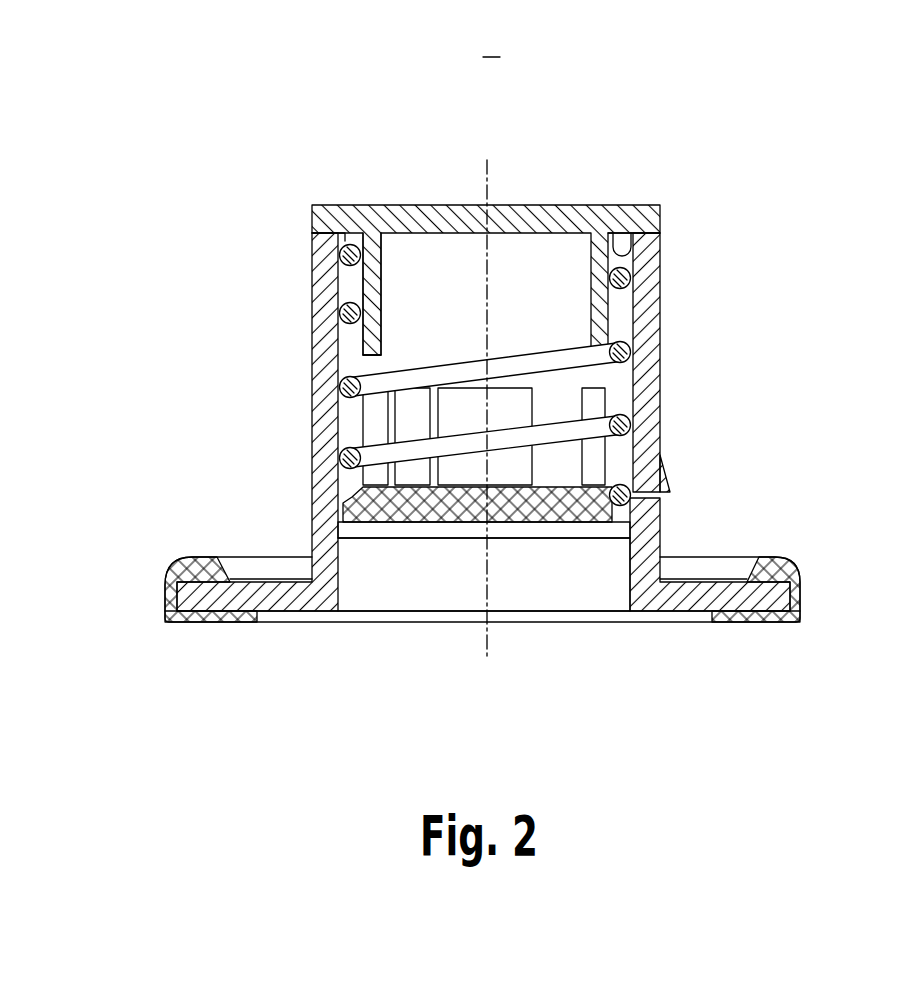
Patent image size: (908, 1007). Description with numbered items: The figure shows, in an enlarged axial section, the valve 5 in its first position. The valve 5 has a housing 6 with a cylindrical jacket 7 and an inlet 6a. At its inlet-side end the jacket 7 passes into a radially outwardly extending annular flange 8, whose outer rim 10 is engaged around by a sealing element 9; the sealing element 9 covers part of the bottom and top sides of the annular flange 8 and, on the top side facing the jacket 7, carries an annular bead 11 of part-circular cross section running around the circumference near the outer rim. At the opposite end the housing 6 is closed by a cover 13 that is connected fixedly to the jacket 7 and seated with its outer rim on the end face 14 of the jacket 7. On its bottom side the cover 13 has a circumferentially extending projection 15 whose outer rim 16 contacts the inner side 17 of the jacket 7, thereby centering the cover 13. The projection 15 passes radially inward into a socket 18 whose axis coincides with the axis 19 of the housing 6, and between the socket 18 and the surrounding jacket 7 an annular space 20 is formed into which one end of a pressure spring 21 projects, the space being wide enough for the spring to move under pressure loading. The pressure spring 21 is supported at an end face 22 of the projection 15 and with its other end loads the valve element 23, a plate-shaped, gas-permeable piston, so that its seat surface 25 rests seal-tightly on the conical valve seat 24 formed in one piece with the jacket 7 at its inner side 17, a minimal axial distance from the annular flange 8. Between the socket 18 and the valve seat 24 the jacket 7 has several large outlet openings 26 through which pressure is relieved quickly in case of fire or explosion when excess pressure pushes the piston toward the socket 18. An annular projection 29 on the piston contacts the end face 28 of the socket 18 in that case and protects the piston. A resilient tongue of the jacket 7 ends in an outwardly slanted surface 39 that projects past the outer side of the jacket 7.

The valve 5 is at (494, 36).
The housing 6 is at (654, 384).
The inlet 6a is at (568, 600).
The jacket 7 is at (637, 317).
The annular flange 8 is at (222, 592).
The sealing element 9 is at (153, 610).
The rim 10 is at (778, 613).
The annular bead 11 is at (176, 570).
The cover 13 is at (533, 215).
The end face 14 is at (648, 240).
The projection 15 is at (345, 238).
The outer rim 16 is at (338, 233).
The inner side 17 is at (344, 285).
The socket 18 is at (370, 280).
The axis 19 is at (488, 160).
The annular space 20 is at (355, 335).
The pressure spring 21 is at (622, 350).
The end face 22 is at (632, 250).
The valve element 23 is at (615, 528).
The valve seat 24 is at (344, 524).
The seat surface 25 is at (605, 468).
The outlet opening 26 is at (603, 458).
The end face 28 is at (368, 353).
The annular projection 29 is at (610, 530).
The slanted surface 39 is at (662, 472).